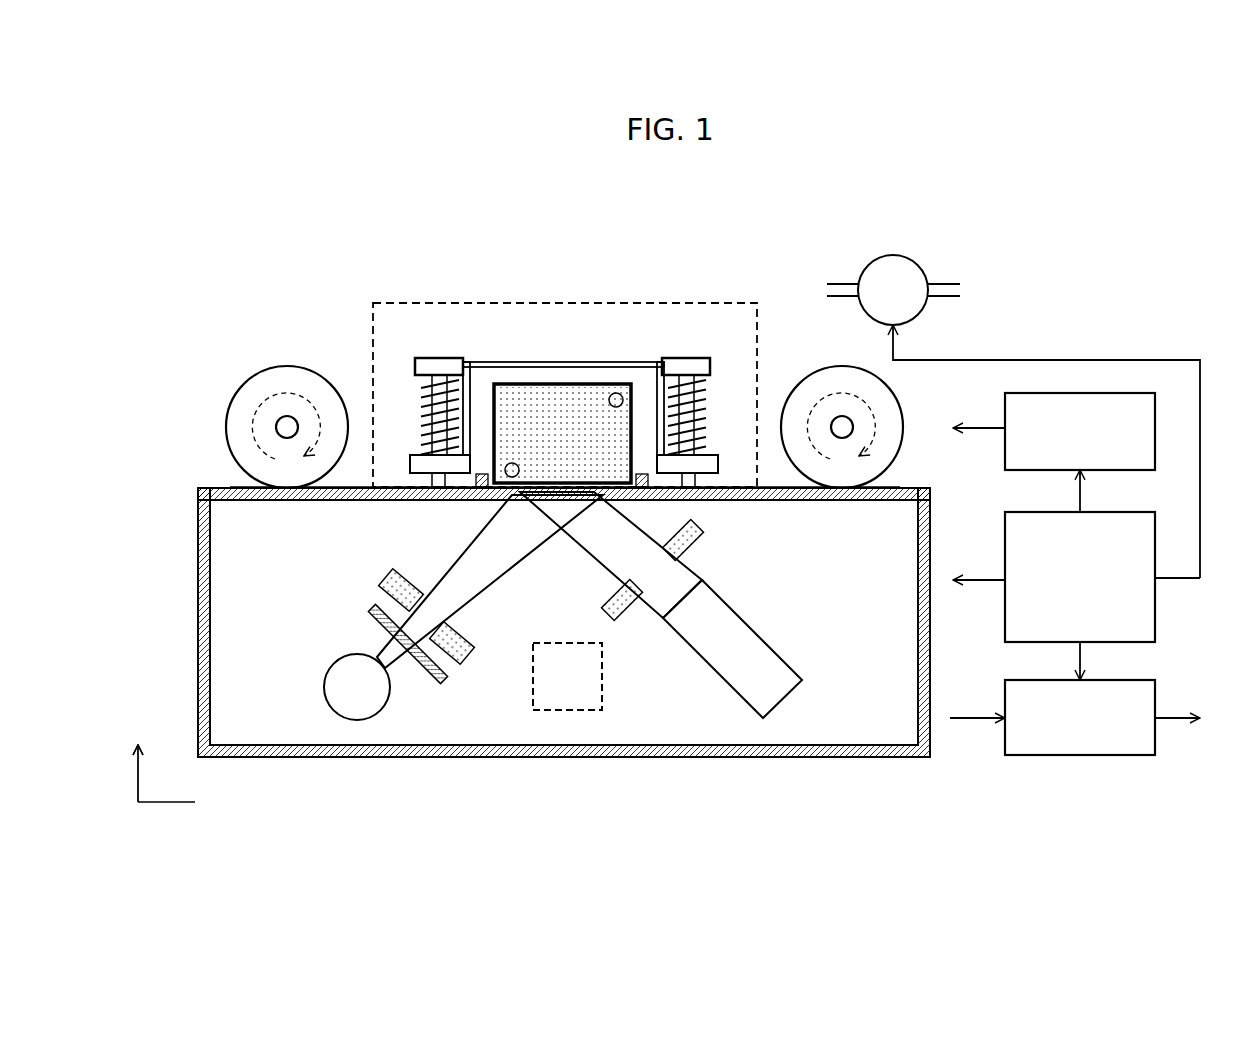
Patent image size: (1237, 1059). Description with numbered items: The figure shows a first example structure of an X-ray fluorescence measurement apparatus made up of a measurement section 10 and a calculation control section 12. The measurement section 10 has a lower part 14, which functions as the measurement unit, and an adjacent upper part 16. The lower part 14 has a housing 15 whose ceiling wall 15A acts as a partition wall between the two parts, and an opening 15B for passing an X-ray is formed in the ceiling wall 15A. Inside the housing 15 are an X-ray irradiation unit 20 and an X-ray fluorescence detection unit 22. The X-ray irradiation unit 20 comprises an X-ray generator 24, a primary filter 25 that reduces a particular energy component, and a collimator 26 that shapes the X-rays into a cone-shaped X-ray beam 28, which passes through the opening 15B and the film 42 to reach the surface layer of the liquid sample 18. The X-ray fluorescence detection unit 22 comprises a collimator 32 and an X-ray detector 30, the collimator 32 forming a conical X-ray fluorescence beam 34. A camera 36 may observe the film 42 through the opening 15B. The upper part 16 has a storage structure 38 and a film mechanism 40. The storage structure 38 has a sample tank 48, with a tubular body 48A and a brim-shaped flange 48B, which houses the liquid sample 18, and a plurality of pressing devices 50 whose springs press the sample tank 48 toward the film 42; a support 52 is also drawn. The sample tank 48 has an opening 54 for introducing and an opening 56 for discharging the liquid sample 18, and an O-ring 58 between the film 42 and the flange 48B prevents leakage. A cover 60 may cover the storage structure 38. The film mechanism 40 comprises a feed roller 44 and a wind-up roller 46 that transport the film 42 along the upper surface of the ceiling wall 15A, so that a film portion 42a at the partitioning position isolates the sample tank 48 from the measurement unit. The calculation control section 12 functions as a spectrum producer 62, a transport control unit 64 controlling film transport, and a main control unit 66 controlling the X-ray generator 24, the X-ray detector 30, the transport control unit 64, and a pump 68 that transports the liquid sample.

The measurement section 10 is at (643, 220).
The calculation control section 12 is at (1037, 212).
The lower part 14 is at (195, 610).
The housing 15 is at (200, 540).
The ceiling wall 15A is at (225, 488).
The opening 15B is at (578, 528).
The upper part 16 is at (228, 316).
The liquid sample 18 is at (562, 410).
The X-ray irradiation unit 20 is at (350, 560).
The X-ray fluorescence detection unit 22 is at (752, 572).
The X-ray generator 24 is at (330, 668).
The primary filter 25 is at (368, 605).
The collimator 26 is at (473, 658).
The X-ray beam 28 is at (448, 565).
The X-ray detector 30 is at (765, 638).
The collimator 32 is at (700, 520).
The X-ray fluorescence beam 34 is at (653, 598).
The camera 36 is at (580, 686).
The storage structure 38 is at (490, 325).
The film mechanism 40 is at (200, 405).
The film 42 is at (358, 485).
The film portion 42a is at (543, 498).
The feed roller 44 is at (822, 362).
The wind-up roller 46 is at (250, 365).
The sample tank 48 is at (600, 362).
The body 48A is at (500, 425).
The flange 48B is at (410, 462).
The pressing device 50 is at (440, 358).
The support 52 is at (717, 403).
The opening 54 is at (620, 393).
The opening 56 is at (520, 498).
The O-ring 58 is at (476, 498).
The cover 60 is at (695, 302).
The spectrum producer 62 is at (1155, 690).
The transport control unit 64 is at (1083, 393).
The main control unit 66 is at (1108, 512).
The pump 68 is at (893, 255).